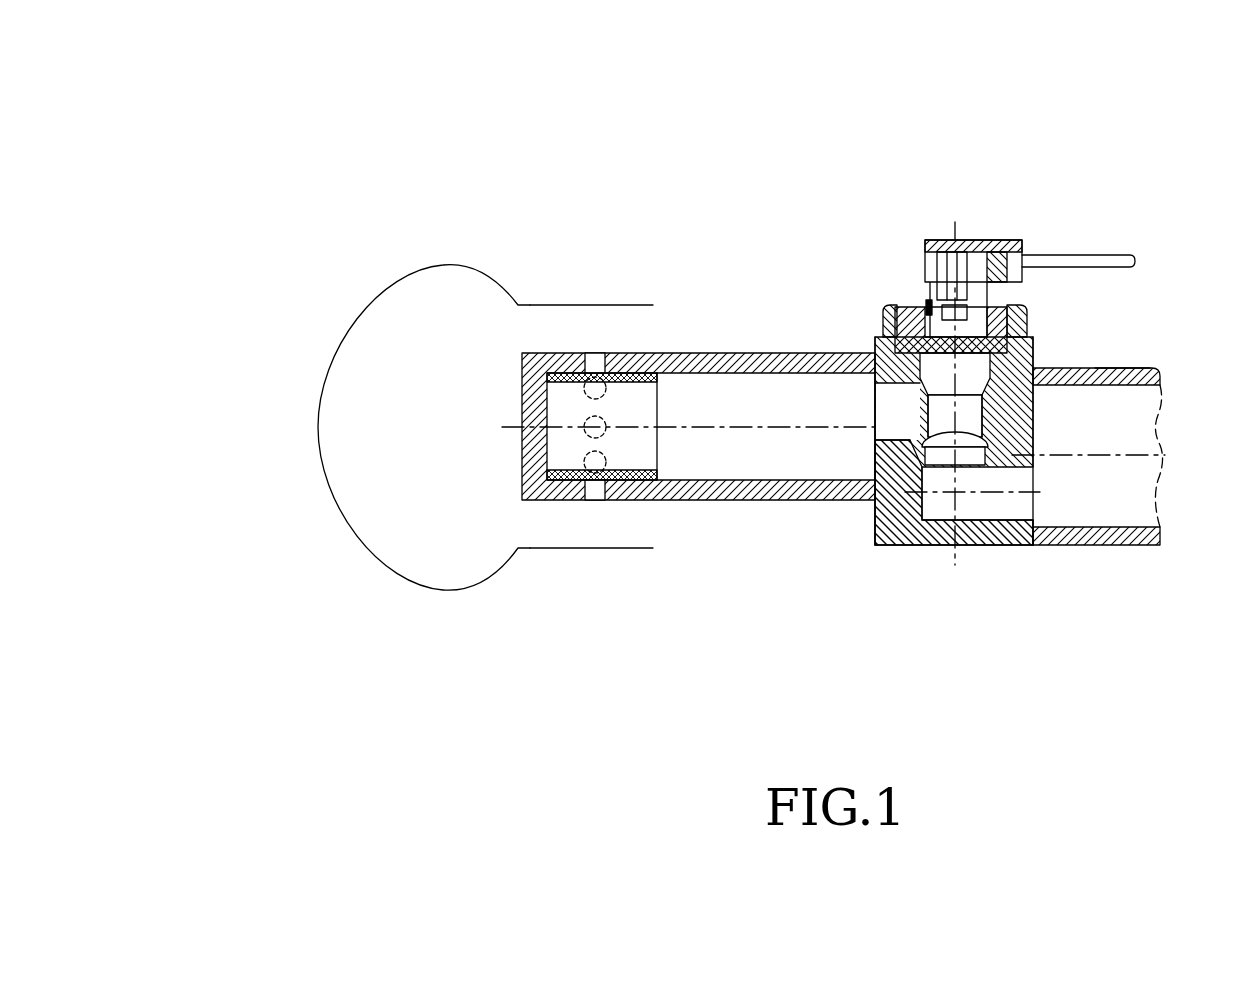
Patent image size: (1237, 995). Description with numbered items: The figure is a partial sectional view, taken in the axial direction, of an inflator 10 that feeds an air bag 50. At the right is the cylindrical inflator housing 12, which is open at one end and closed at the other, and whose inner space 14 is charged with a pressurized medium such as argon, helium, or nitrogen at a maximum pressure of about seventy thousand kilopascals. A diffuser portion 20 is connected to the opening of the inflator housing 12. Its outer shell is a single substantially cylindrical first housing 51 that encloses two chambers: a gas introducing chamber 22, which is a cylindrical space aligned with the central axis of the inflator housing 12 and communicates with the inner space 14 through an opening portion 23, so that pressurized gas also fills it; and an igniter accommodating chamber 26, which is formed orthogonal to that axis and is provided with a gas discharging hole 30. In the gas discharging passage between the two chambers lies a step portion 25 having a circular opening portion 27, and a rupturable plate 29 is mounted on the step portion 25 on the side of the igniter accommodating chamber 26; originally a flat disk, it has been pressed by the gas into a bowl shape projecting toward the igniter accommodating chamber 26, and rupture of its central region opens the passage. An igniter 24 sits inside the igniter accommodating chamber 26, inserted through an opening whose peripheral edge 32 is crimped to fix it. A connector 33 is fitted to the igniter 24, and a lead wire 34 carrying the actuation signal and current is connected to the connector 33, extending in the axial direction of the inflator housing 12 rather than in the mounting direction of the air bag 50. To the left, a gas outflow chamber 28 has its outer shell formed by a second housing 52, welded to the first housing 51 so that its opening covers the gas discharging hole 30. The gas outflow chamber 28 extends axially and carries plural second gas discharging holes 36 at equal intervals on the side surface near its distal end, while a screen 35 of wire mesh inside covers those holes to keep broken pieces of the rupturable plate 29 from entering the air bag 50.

The inflator 10 is at (830, 548).
The inflator housing 12 is at (1127, 548).
The inner space 14 is at (1131, 446).
The diffuser portion 20 is at (932, 212).
The gas introducing chamber 22 is at (955, 547).
The opening portion 23 is at (1018, 547).
The igniter 24 is at (898, 330).
The step portion 25 is at (998, 547).
The igniter accommodating chamber 26 is at (1003, 376).
The circular opening portion 27 is at (930, 453).
The gas outflow chamber 28 is at (746, 419).
The rupturable plate 29 is at (1105, 390).
The gas discharging hole 30 is at (888, 400).
The peripheral edge 32 is at (1018, 300).
The connector 33 is at (965, 240).
The lead wire 34 is at (1113, 256).
The screen 35 is at (637, 353).
The second gas discharging holes 36 is at (593, 352).
The air bag 50 is at (352, 313).
The first housing 51 is at (895, 547).
The second housing 52 is at (726, 353).